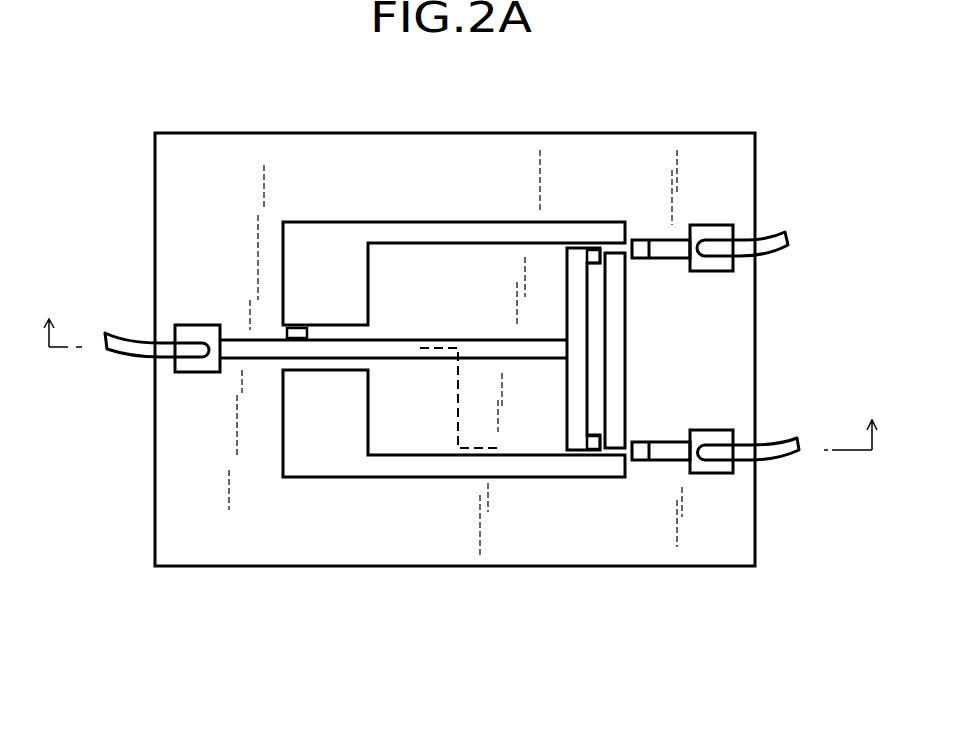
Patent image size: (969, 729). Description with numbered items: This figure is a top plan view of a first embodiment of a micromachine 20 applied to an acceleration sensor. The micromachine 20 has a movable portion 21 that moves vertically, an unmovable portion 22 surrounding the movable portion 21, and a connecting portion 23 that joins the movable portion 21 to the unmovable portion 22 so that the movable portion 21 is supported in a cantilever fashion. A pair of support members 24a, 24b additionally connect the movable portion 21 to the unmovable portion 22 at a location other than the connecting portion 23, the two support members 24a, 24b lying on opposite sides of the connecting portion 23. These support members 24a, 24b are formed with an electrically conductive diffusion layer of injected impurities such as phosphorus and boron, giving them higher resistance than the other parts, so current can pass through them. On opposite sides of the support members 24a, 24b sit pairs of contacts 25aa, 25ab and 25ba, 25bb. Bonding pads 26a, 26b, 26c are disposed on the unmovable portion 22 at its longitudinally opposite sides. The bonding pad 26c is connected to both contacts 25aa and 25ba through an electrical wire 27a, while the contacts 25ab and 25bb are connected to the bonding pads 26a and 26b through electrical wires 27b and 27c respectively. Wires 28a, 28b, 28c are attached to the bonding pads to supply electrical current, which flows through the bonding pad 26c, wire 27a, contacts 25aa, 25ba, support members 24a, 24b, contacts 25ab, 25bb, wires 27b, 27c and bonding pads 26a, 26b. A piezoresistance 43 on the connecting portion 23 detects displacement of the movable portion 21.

The micromachine 20 is at (118, 168).
The movable portion 21 is at (400, 253).
The unmovable portion 22 is at (740, 545).
The connecting portion 23 is at (328, 363).
The support member 24a is at (607, 250).
The support member 24b is at (612, 453).
The contact 25aa is at (590, 250).
The contact 25ab is at (642, 240).
The contact 25ba is at (595, 452).
The contact 25bb is at (637, 458).
The bonding pad 26a is at (712, 232).
The bonding pad 26b is at (715, 468).
The bonding pad 26c is at (190, 367).
The electrical wire 27a is at (290, 348).
The electrical wire 27b is at (673, 262).
The electrical wire 27c is at (667, 448).
The wire 28a is at (127, 333).
The wire 28b is at (773, 235).
The wire 28c is at (785, 438).
The piezoresistance 43 is at (303, 328).